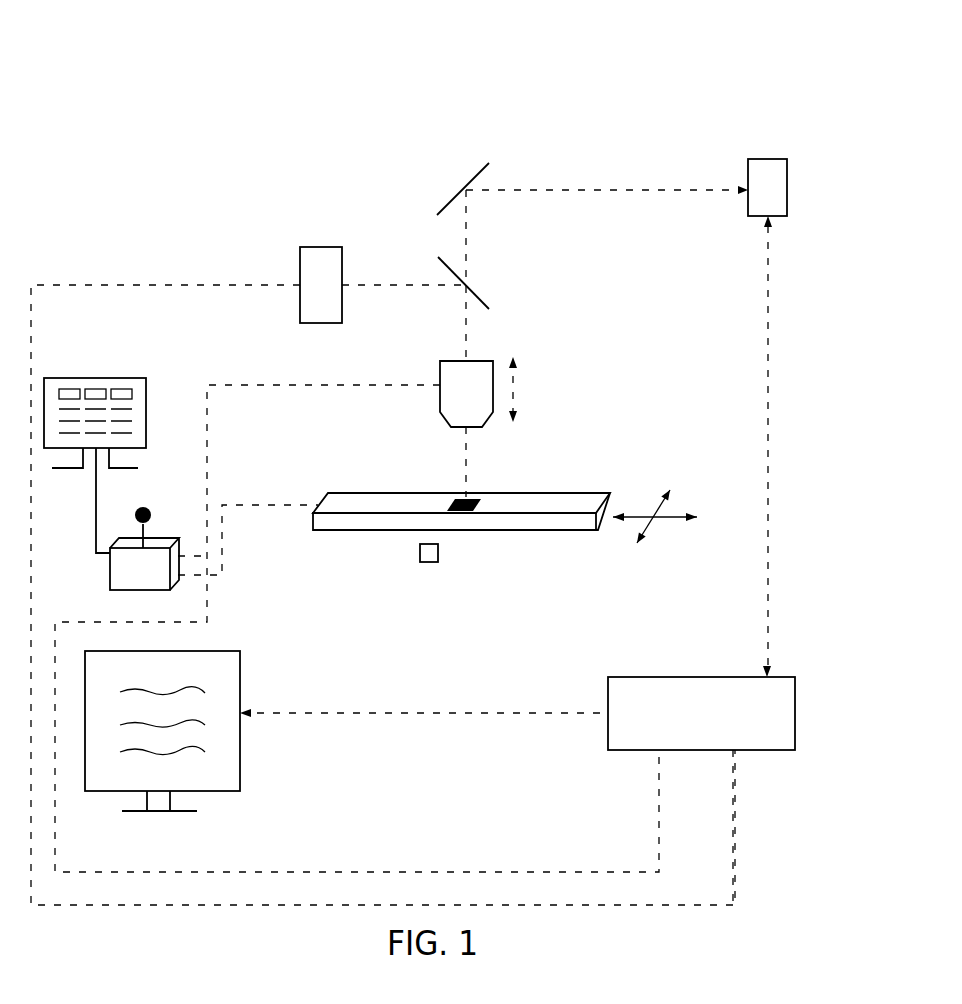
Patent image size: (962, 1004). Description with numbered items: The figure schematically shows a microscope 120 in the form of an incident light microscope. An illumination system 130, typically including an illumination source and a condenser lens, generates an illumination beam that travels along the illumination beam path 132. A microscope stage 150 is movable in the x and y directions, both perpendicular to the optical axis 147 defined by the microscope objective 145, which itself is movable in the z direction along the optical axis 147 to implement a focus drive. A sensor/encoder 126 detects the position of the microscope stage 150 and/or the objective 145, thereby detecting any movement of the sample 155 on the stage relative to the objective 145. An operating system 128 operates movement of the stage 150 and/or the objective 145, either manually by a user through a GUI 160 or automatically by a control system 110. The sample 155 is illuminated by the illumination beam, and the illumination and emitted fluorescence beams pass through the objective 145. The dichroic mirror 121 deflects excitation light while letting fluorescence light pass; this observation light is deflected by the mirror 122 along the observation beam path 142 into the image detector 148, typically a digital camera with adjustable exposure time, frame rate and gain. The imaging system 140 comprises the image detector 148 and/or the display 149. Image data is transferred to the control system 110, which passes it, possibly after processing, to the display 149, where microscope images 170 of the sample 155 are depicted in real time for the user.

The control system 110 is at (795, 713).
The microscope 120 is at (222, 57).
The dichroic mirror 121 is at (477, 297).
The mirror 122 is at (474, 172).
The sensor/encoder 126 is at (418, 553).
The operating system 128 is at (108, 565).
The illumination system 130 is at (320, 247).
The illumination beam path 132 is at (386, 284).
The imaging system 140 is at (790, 243).
The observation beam path 142 is at (575, 190).
The microscope objective 145 is at (440, 370).
The optical axis 147 is at (468, 460).
The image detector 148 is at (770, 159).
The display 149 is at (240, 675).
The microscope stage 150 is at (575, 491).
The sample 155 is at (458, 500).
The GUI 160 is at (127, 378).
The microscope images 170 is at (223, 787).